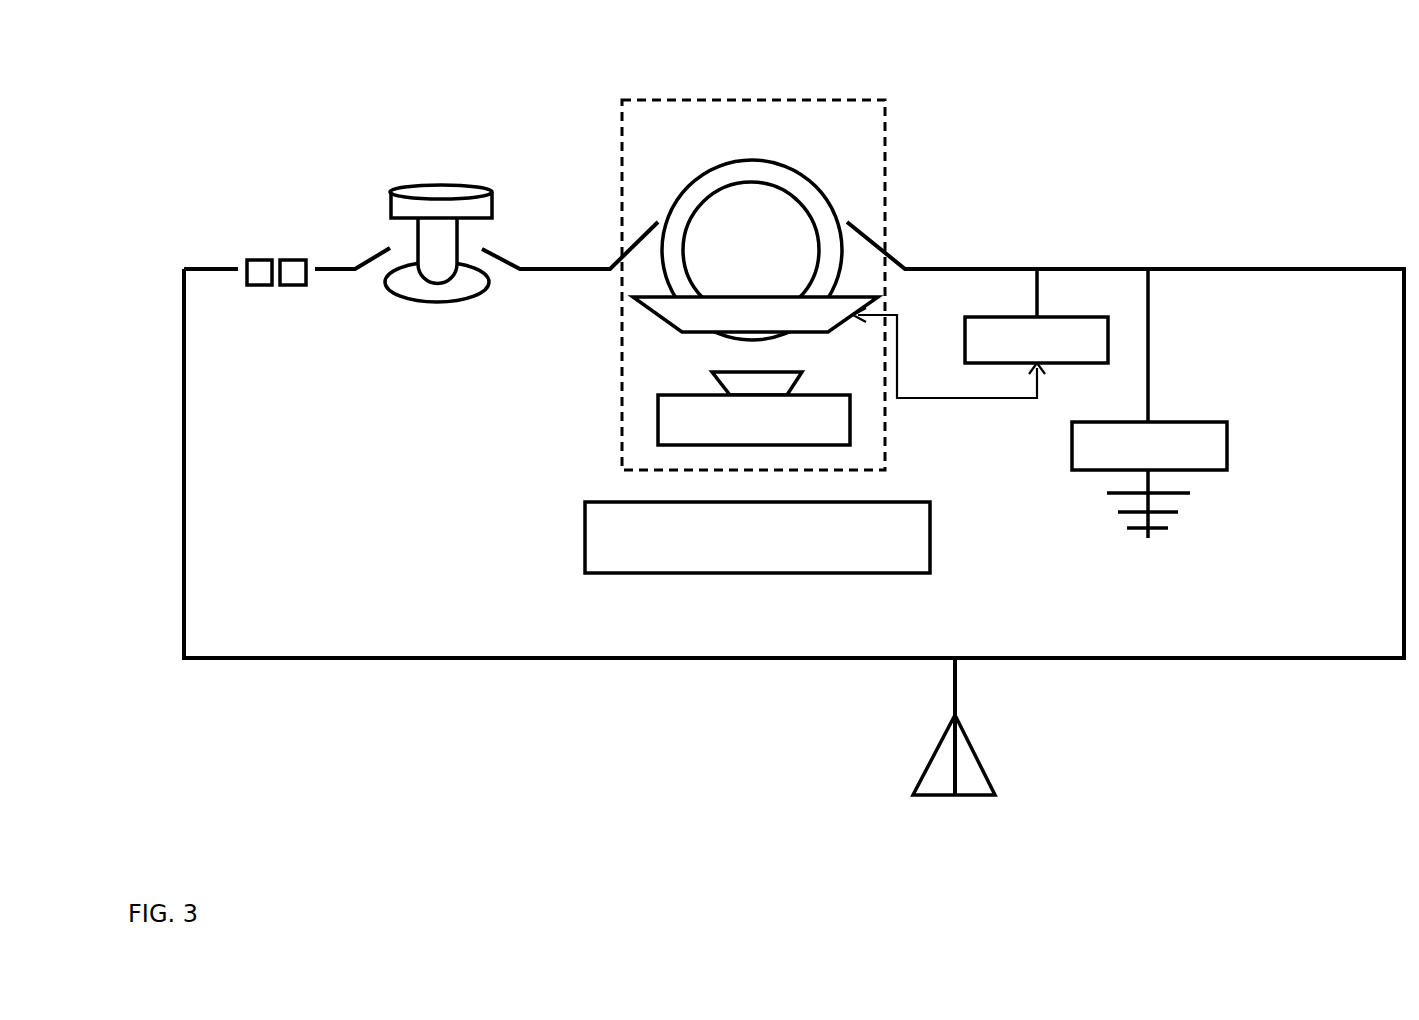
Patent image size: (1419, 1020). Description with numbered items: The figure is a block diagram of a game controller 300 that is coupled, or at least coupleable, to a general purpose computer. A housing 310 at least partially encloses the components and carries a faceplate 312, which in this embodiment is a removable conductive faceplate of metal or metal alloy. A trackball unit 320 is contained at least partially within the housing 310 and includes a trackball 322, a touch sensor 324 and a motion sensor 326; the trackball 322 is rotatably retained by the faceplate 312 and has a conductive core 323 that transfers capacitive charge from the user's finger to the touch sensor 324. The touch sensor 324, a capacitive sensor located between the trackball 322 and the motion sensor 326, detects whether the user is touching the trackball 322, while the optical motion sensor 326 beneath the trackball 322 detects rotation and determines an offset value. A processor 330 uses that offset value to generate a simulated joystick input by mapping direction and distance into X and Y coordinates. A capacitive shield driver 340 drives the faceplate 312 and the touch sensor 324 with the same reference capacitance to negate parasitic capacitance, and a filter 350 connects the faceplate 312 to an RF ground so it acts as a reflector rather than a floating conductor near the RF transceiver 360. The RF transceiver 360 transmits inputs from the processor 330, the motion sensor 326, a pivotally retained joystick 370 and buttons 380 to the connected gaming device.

The game controller 300 is at (282, 86).
The housing 310 is at (373, 660).
The faceplate 312 is at (1350, 265).
The trackball unit 320 is at (665, 100).
The trackball 322 is at (677, 215).
The conductive core 323 is at (782, 210).
The touch sensor 324 is at (667, 308).
The motion sensor 326 is at (658, 415).
The processor 330 is at (757, 537).
The capacitive shield driver 340 is at (1075, 317).
The filter 350 is at (1200, 418).
The RF transceiver 360 is at (930, 798).
The joystick 370 is at (438, 183).
The buttons 380 is at (291, 259).